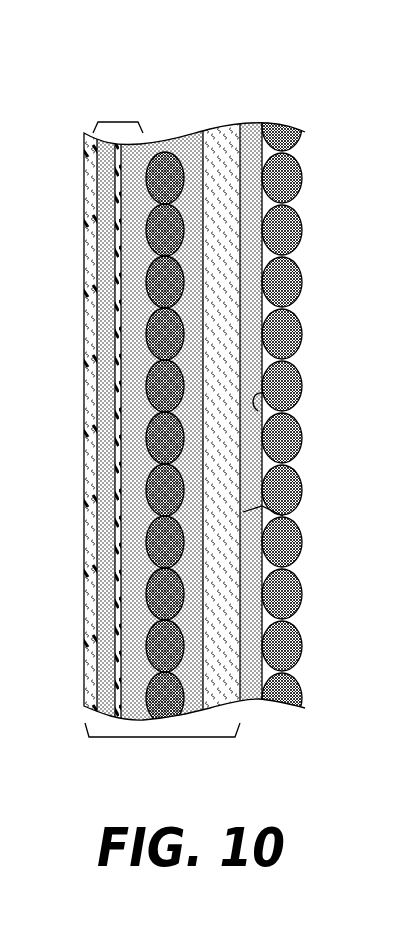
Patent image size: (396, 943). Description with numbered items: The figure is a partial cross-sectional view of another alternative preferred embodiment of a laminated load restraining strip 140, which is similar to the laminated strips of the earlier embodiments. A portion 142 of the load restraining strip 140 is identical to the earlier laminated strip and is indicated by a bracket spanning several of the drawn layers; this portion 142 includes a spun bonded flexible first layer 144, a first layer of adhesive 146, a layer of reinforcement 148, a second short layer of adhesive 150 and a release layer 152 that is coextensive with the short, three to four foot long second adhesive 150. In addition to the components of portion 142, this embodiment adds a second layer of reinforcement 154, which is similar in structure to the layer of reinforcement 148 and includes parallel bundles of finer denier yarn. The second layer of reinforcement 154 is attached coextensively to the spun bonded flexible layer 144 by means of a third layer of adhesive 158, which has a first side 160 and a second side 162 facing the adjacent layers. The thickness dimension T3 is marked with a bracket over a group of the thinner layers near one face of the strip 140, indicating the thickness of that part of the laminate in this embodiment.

The laminated load restraining strip 140 is at (192, 60).
The portion of the load restraining strip 142 is at (159, 737).
The spun bonded flexible first layer 144 is at (223, 119).
The first layer of adhesive 146 is at (192, 129).
The layer of reinforcement 148 is at (165, 134).
The second short layer of adhesive 150 is at (110, 168).
The release layer 152 is at (82, 614).
The second layer of reinforcement 154 is at (306, 187).
The third layer of adhesive 158 is at (253, 707).
The first side 160 is at (285, 412).
The second side 162 is at (285, 516).
The thickness T3 is at (120, 120).